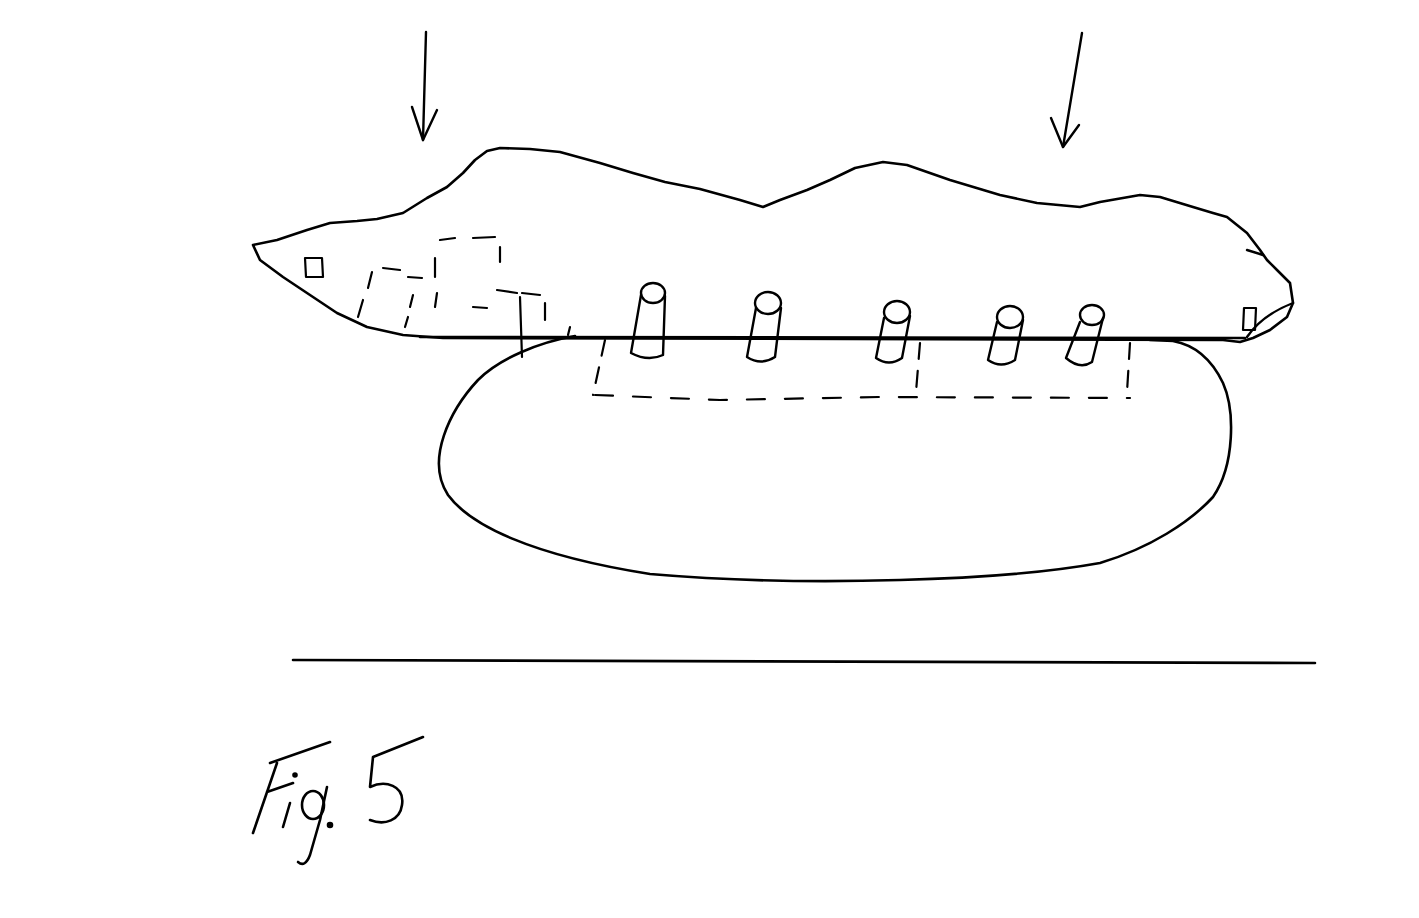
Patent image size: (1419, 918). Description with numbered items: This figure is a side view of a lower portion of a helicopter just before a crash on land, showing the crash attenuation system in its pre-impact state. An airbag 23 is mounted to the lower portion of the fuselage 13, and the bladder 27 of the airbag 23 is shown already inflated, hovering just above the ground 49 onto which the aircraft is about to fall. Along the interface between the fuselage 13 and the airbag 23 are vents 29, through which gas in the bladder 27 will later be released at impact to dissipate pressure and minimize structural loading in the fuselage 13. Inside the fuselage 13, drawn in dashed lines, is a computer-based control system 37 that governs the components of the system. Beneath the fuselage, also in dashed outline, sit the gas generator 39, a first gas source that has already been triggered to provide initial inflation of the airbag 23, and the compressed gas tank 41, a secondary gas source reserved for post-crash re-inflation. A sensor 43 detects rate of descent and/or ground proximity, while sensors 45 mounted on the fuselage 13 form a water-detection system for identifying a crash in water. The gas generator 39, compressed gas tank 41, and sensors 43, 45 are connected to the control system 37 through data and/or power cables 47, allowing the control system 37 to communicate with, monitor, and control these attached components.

The fuselage 13 is at (702, 187).
The airbag 23 is at (433, 472).
The bladder 27 is at (1213, 497).
The vents 29 is at (640, 303).
The computer-based control system 37 is at (457, 310).
The gas generator 39 is at (850, 400).
The compressed gas tank 41 is at (1067, 402).
The sensor 43 is at (383, 315).
The sensors 45 is at (312, 265).
The data and/or power cables 47 is at (522, 340).
The ground 49 is at (327, 657).